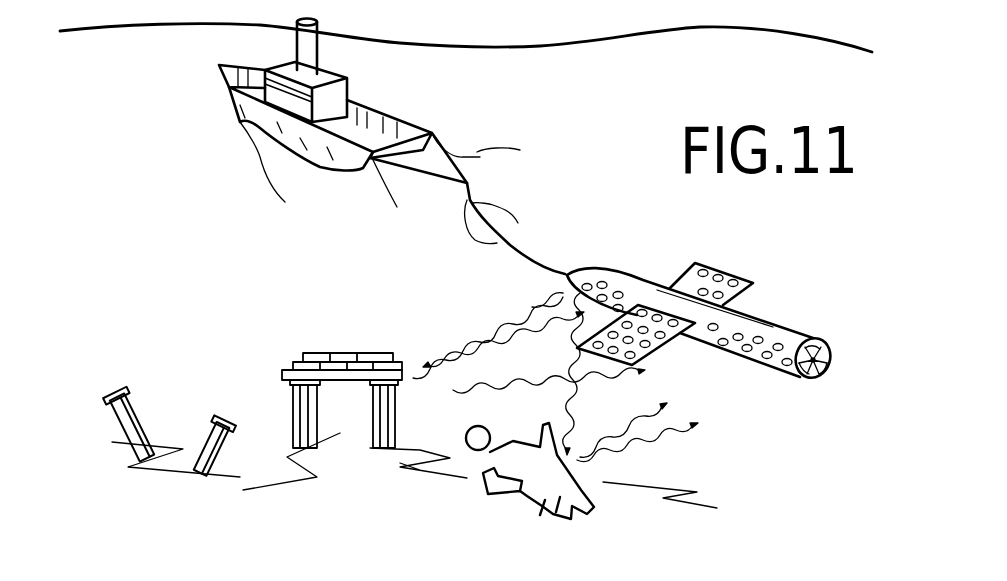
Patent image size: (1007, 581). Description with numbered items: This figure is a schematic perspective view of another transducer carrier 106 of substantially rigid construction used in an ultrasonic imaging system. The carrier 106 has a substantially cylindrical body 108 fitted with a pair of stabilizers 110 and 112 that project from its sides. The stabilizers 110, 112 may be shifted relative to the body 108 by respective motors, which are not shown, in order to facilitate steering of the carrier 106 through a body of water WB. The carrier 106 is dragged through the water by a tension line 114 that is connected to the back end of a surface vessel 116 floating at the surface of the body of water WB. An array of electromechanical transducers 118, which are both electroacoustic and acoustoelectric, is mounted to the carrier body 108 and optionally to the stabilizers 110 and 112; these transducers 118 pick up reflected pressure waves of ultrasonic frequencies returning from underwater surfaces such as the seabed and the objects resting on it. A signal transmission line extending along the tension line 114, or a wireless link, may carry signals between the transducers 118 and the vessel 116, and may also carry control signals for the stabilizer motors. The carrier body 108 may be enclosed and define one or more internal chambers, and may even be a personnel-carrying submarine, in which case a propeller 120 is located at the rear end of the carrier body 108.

The body of water WB is at (410, 43).
The surface vessel 116 is at (390, 118).
The tension line 114 is at (535, 250).
The transducer carrier 106 is at (716, 336).
The carrier body 108 is at (770, 316).
The stabilizer 110 is at (720, 267).
The stabilizer 112 is at (671, 346).
The electromechanical transducers 118 is at (703, 331).
The propeller 120 is at (820, 380).